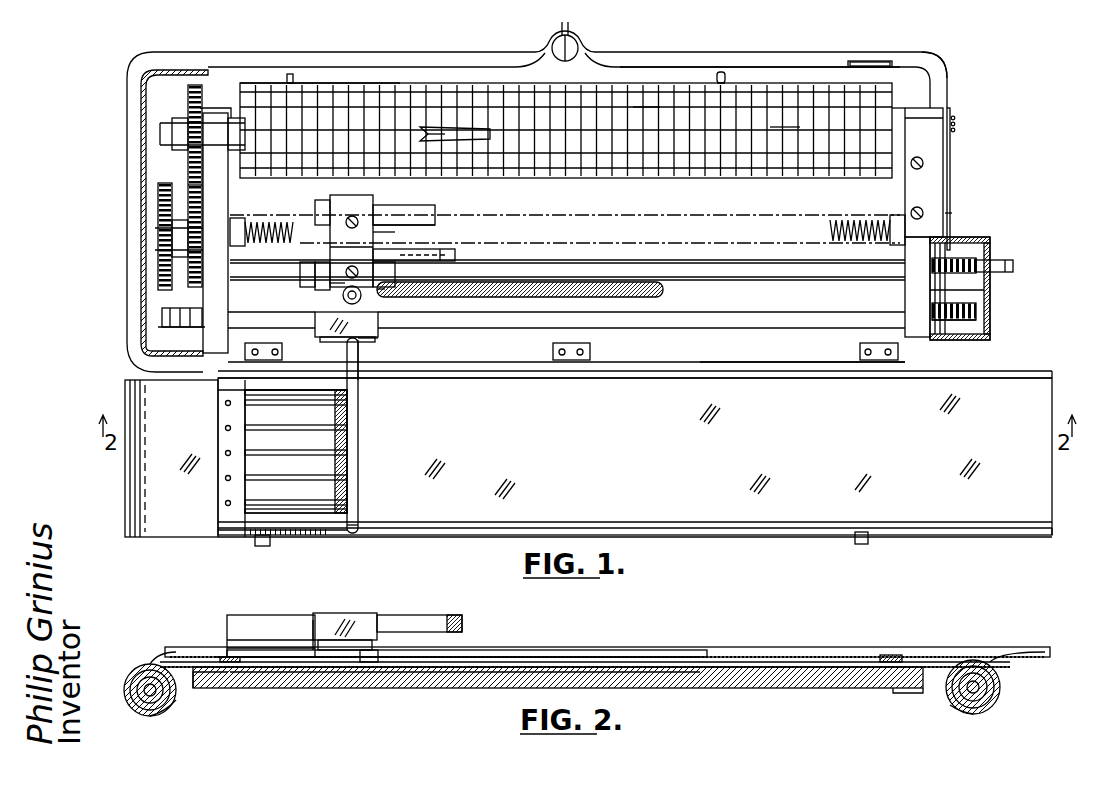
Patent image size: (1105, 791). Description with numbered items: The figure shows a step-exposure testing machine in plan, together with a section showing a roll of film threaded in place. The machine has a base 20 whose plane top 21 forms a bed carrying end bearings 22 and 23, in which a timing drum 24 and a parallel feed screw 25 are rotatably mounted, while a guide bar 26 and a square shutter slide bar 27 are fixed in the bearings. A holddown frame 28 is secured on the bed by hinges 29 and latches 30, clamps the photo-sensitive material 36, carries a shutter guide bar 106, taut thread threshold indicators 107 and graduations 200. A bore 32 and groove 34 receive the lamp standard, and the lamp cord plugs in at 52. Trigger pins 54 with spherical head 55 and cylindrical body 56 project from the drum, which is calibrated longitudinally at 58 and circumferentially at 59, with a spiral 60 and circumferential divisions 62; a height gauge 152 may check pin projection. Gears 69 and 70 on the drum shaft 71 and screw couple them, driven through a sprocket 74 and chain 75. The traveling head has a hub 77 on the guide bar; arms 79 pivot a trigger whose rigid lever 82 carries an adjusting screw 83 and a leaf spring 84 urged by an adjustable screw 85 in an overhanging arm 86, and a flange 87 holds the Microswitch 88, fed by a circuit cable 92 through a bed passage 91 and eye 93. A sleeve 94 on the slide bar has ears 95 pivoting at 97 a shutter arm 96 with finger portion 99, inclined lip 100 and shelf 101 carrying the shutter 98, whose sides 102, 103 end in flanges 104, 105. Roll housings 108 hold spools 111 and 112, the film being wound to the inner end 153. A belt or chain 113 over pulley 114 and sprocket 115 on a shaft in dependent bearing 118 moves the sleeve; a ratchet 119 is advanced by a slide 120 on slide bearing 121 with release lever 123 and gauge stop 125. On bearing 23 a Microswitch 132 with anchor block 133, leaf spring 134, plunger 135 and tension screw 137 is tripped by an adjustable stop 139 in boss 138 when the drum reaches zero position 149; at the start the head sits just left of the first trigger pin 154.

In FIG. 1, the base 20 is at (140, 63).
In FIG. 1, the plane top 21 is at (777, 75).
In FIG. 2, the plane top 21 is at (813, 666).
In FIG. 1, the end bearing 22 is at (218, 128).
In FIG. 1, the end bearing 23 is at (930, 120).
In FIG. 1, the timing drum 24 is at (322, 90).
In FIG. 1, the feed screw 25 is at (877, 220).
In FIG. 1, the guide bar 26 is at (710, 260).
In FIG. 1, the shutter slide bar 27 is at (692, 318).
In FIG. 2, the shutter slide bar 27 is at (463, 623).
In FIG. 1, the holddown frame 28 is at (335, 520).
In FIG. 2, the holddown frame 28 is at (222, 643).
In FIG. 1, the hinge 29 is at (583, 360).
In FIG. 1, the spring clasp or latch 30 is at (257, 540).
In FIG. 1, the bore 32 is at (570, 48).
In FIG. 1, the groove 34 is at (567, 42).
In FIG. 1, the photo-sensitive material 36 is at (260, 490).
In FIG. 2, the photo-sensitive material 36 is at (732, 667).
In FIG. 1, the lamp cord plug connection 52 is at (813, 130).
In FIG. 1, the trigger pin 54 is at (430, 128).
In FIG. 1, the spherical head 55 is at (723, 70).
In FIG. 1, the cylindrical body 56 is at (727, 82).
In FIG. 1, the longitudinal calibration in seconds 58 is at (770, 127).
In FIG. 1, the circumferential calibration 59 is at (887, 110).
In FIG. 1, the spiral 60 is at (332, 103).
In FIG. 1, the circumferential divisions 62 is at (633, 107).
In FIG. 1, the gear 69 is at (188, 95).
In FIG. 1, the gear 70 is at (188, 185).
In FIG. 1, the drum shaft 71 is at (172, 133).
In FIG. 1, the sprocket 74 is at (172, 242).
In FIG. 1, the chain 75 is at (160, 207).
In FIG. 1, the hub 77 is at (340, 284).
In FIG. 1, the arm 79 is at (330, 203).
In FIG. 1, the rigid lever 82 is at (374, 214).
In FIG. 1, the adjusting screw 83 is at (295, 236).
In FIG. 1, the leaf spring 84 is at (387, 222).
In FIG. 1, the adjustable screw 85 is at (310, 283).
In FIG. 1, the overhanging arm 86 is at (413, 268).
In FIG. 1, the flange 87 is at (382, 235).
In FIG. 1, the Microswitch 88 is at (347, 247).
In FIG. 1, the passage 91 is at (572, 283).
In FIG. 1, the circuit cable 92 is at (522, 288).
In FIG. 1, the eye 93 is at (358, 302).
In FIG. 1, the sleeve 94 is at (362, 338).
In FIG. 2, the sleeve 94 is at (360, 618).
In FIG. 1, the ear 95 is at (320, 340).
In FIG. 2, the ear 95 is at (313, 625).
In FIG. 1, the shutter arm 96 is at (358, 446).
In FIG. 1, the pivot 97 is at (358, 372).
In FIG. 2, the pivot 97 is at (390, 640).
In FIG. 1, the shutter 98 is at (730, 520).
In FIG. 2, the shutter 98 is at (587, 655).
In FIG. 1, the finger portion 99 is at (358, 524).
In FIG. 1, the inclined lip 100 is at (338, 481).
In FIG. 2, the inclined lip 100 is at (333, 655).
In FIG. 2, the projecting shelf 101 is at (370, 672).
In FIG. 1, the shutter side 102 is at (868, 487).
In FIG. 1, the shutter side 103 is at (770, 378).
In FIG. 1, the horizontal flange 104 is at (1050, 536).
In FIG. 1, the horizontal flange 105 is at (1040, 357).
In FIG. 1, the shutter guide bar 106 is at (272, 372).
In FIG. 2, the shutter guide bar 106 is at (262, 653).
In FIG. 1, the threshold indicator 107 is at (308, 447).
In FIG. 2, the threshold indicator 107 is at (282, 667).
In FIG. 1, the roll housing 108 is at (130, 408).
In FIG. 2, the roll housing 108 is at (146, 665).
In FIG. 2, the spool 111 is at (170, 705).
In FIG. 2, the spool 112 is at (953, 705).
In FIG. 1, the belt or chain 113 is at (162, 324).
In FIG. 1, the pulley 114 is at (162, 313).
In FIG. 1, the sprocket 115 is at (978, 316).
In FIG. 1, the dependent bearing 118 is at (990, 332).
In FIG. 1, the ratchet 119 is at (970, 260).
In FIG. 1, the slide 120 is at (960, 256).
In FIG. 1, the dependent slide bearing 121 is at (992, 280).
In FIG. 1, the release lever 123 is at (1013, 268).
In FIG. 1, the gauge and stop 125 is at (1015, 250).
In FIG. 1, the Microswitch 132 is at (937, 167).
In FIG. 1, the anchor block 133 is at (950, 115).
In FIG. 1, the leaf spring 134 is at (952, 180).
In FIG. 1, the plunger 135 is at (950, 213).
In FIG. 1, the tension adjusting screw 137 is at (956, 127).
In FIG. 1, the boss 138 is at (398, 245).
In FIG. 1, the adjustable stop 139 is at (450, 245).
In FIG. 1, the zero position 149 is at (903, 103).
In FIG. 1, the height gauge 152 is at (440, 134).
In FIG. 2, the inner end of film housing extension 153 is at (903, 656).
In FIG. 1, the first cooperative trigger pin 154 is at (290, 72).
In FIG. 1, the graduations 200 is at (303, 534).